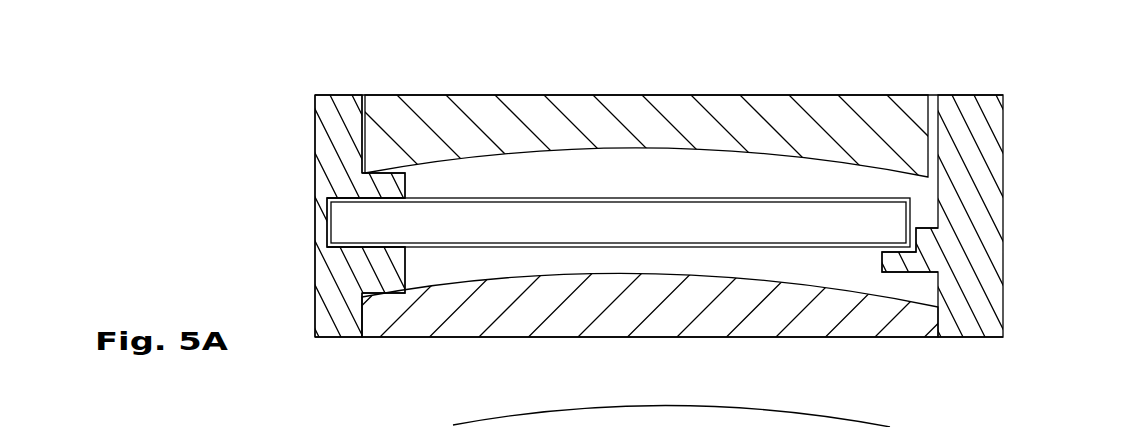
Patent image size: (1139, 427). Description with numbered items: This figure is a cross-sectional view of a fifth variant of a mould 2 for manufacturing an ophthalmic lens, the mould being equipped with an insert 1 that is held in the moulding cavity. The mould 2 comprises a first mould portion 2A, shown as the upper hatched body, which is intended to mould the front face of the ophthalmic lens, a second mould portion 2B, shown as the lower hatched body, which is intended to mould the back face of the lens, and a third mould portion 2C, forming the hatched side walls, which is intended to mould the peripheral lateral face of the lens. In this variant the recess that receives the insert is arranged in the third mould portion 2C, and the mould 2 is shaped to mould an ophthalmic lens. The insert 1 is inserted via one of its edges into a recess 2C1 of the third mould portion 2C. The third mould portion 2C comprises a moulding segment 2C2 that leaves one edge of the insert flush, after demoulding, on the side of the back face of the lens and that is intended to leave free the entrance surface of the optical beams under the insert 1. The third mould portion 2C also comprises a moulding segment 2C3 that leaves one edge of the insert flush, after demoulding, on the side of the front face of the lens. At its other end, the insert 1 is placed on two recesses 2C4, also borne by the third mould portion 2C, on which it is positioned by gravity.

The insert 1 is at (552, 224).
The mould 2 is at (1025, 125).
The first mould portion 2A is at (652, 142).
The second mould portion 2B is at (788, 298).
The third mould portion 2C is at (955, 237).
The recess 2C1 is at (345, 280).
The moulding segment 2C2 is at (377, 273).
The moulding segment 2C3 is at (379, 187).
The recesses 2C4 is at (900, 250).